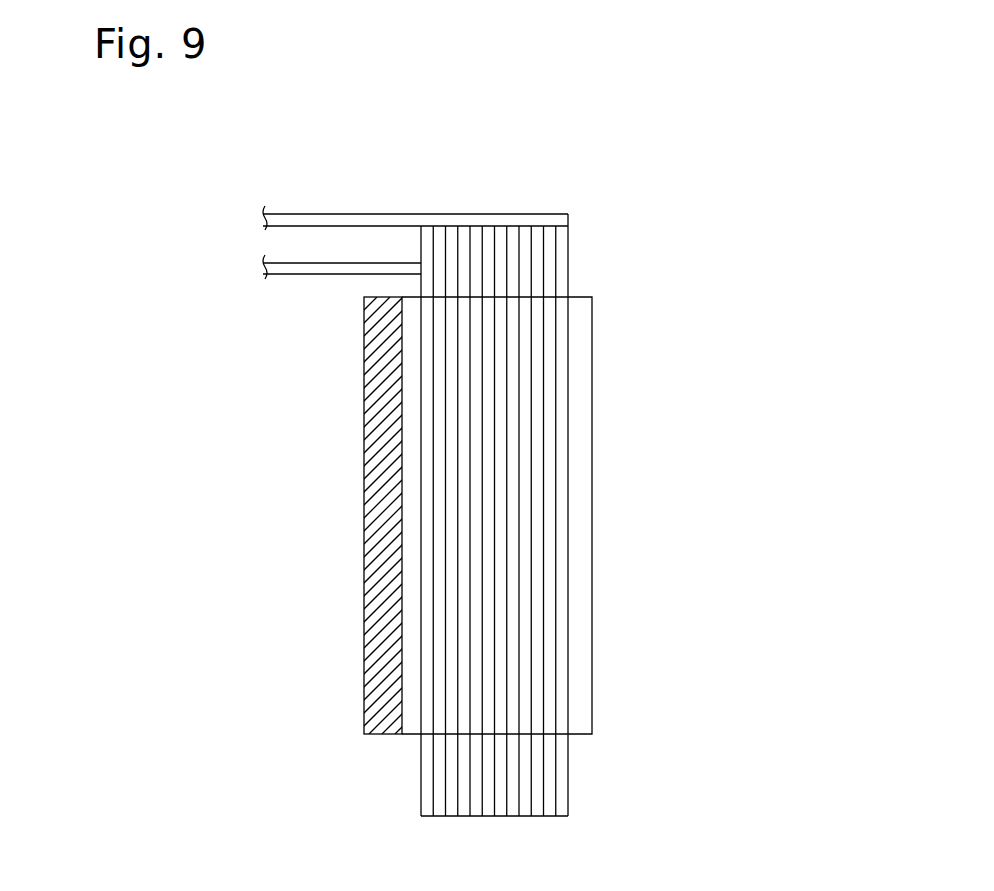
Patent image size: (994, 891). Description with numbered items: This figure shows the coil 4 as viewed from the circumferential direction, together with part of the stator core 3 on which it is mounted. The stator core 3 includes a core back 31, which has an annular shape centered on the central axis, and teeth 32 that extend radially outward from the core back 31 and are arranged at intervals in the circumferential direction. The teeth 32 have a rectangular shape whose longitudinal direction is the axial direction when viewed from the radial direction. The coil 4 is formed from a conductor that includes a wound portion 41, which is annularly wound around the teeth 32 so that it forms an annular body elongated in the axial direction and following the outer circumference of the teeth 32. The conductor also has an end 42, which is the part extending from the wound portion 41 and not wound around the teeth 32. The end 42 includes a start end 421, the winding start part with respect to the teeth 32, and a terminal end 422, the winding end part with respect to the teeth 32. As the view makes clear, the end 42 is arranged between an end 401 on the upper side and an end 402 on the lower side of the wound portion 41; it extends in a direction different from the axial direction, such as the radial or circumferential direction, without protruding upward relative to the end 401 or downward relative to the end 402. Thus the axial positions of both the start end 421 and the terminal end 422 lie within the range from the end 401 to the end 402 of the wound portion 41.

The coil 4 is at (512, 184).
The end on the upper side of the wound portion 401 is at (561, 212).
The end on the lower side of the wound portion 402 is at (565, 818).
The wound portion 41 is at (567, 845).
The end 42 is at (415, 244).
The start end 421 is at (302, 270).
The terminal end 422 is at (393, 220).
The stator core 3 is at (280, 388).
The core back 31 is at (372, 403).
The teeth 32 is at (410, 460).